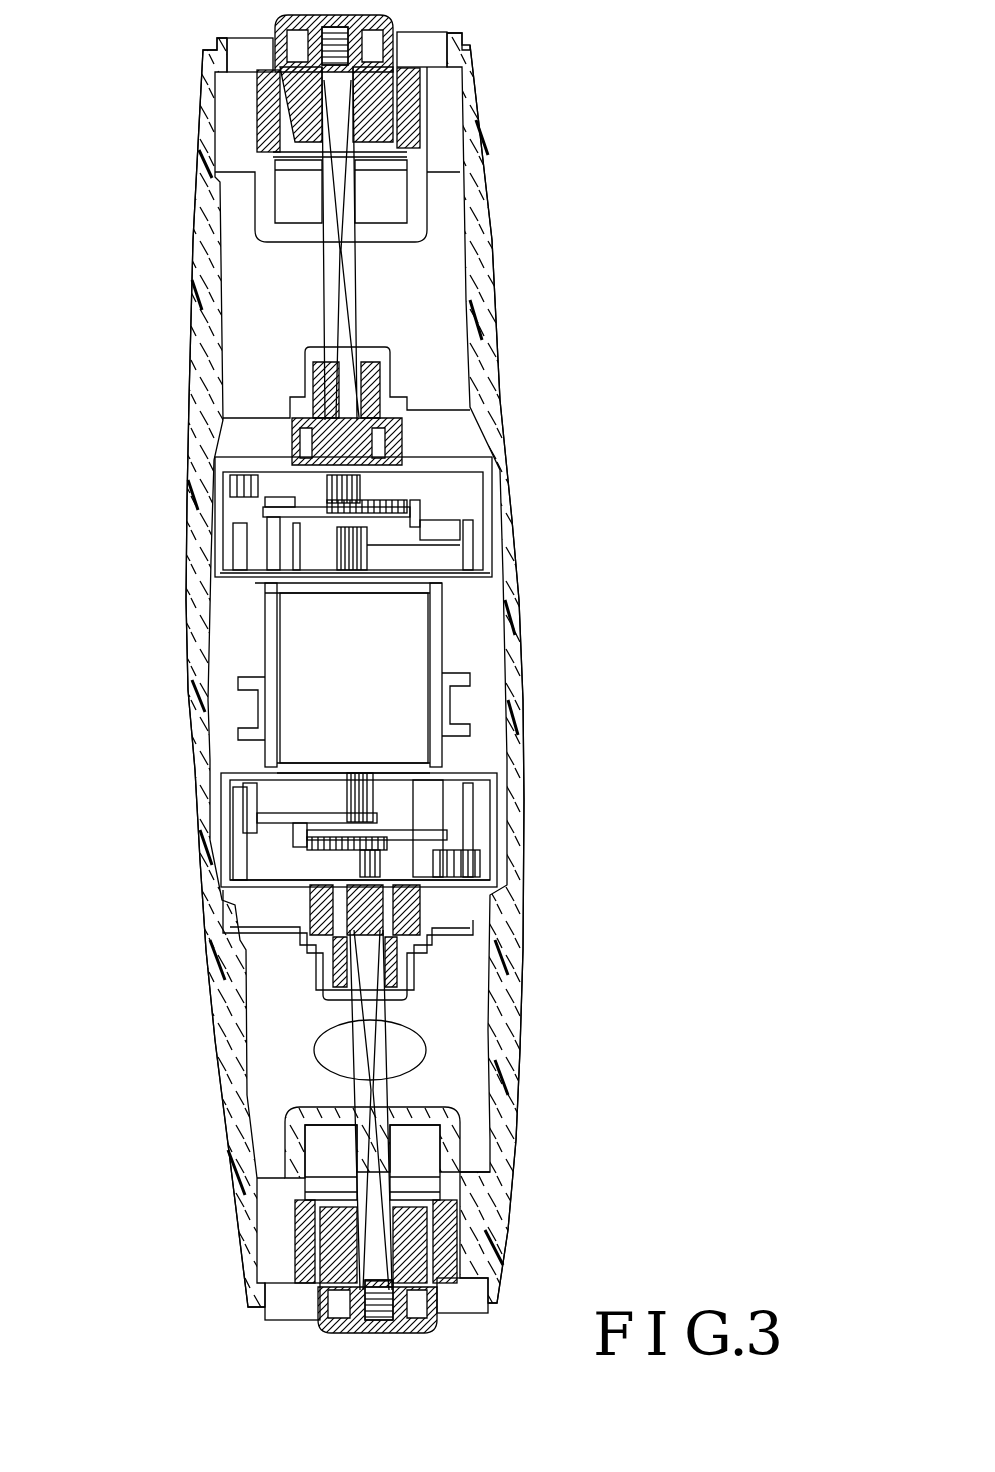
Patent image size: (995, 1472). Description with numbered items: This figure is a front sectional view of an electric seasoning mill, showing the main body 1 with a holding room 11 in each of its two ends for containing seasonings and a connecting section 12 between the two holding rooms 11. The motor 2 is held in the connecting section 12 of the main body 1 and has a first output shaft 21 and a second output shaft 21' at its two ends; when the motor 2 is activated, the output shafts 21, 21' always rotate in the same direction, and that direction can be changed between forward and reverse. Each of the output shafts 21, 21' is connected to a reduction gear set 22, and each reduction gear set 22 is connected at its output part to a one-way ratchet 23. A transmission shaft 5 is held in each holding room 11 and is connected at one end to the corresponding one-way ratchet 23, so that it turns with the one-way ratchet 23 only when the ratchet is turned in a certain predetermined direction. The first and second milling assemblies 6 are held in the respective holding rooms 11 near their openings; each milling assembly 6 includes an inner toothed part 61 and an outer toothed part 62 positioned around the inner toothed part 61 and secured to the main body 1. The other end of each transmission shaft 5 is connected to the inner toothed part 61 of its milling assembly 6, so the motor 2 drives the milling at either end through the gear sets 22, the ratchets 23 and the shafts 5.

The main body 1 is at (192, 775).
The holding room 11 is at (433, 303).
The connecting section 12 is at (190, 672).
The motor 2 is at (297, 617).
The first output shaft 21 is at (483, 762).
The second output shaft 21' is at (482, 531).
The reduction gear set 22 is at (427, 500).
The one-way ratchet 23 is at (293, 440).
The transmission shaft 5 is at (323, 290).
The milling assembly 6 is at (577, 135).
The inner toothed part 61 is at (373, 95).
The outer toothed part 62 is at (410, 128).